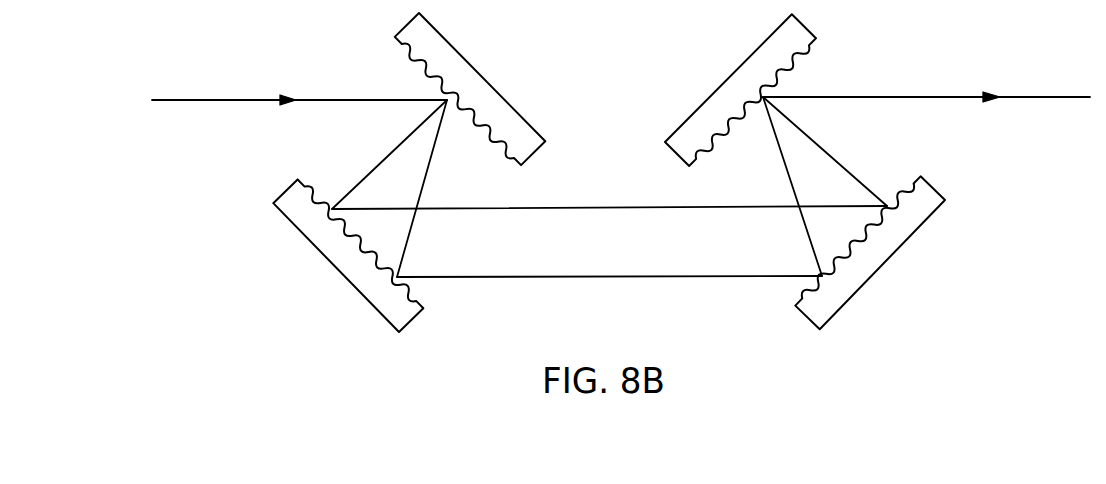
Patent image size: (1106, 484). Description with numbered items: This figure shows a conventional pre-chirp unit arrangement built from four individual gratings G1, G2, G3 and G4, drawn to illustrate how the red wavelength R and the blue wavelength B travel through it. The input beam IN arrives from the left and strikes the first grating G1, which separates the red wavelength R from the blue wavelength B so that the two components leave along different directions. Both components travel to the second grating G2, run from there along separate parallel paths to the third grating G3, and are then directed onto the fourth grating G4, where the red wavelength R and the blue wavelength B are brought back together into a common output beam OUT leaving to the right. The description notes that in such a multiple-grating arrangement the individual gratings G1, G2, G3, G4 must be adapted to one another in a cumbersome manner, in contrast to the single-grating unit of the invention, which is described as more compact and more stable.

The grating G1 is at (508, 100).
The grating G2 is at (340, 265).
The grating G3 is at (883, 262).
The grating G4 is at (708, 98).
The blue wavelength B is at (609, 153).
The red wavelength R is at (609, 210).
The input beam IN is at (299, 82).
The output beam OUT is at (926, 79).